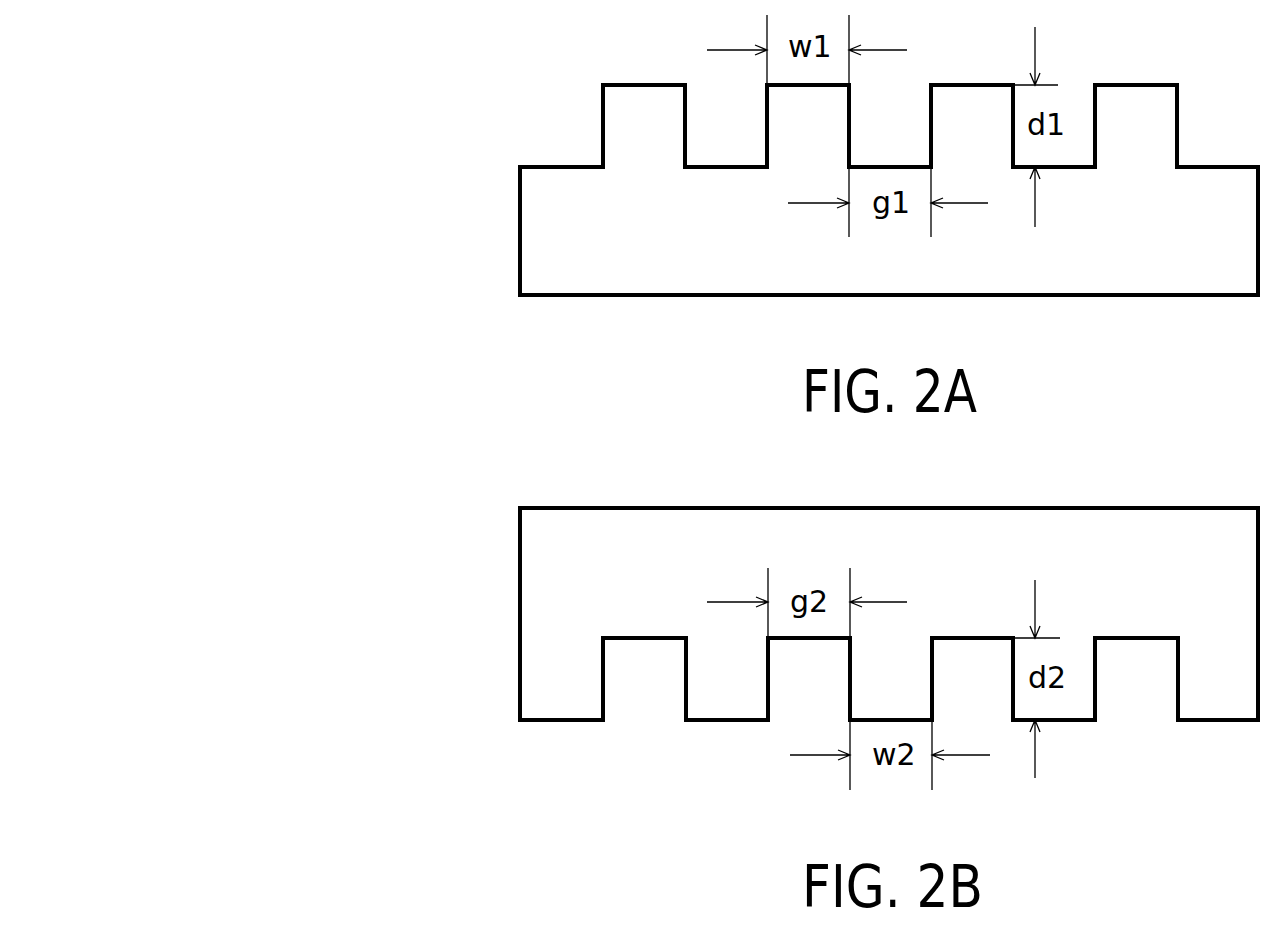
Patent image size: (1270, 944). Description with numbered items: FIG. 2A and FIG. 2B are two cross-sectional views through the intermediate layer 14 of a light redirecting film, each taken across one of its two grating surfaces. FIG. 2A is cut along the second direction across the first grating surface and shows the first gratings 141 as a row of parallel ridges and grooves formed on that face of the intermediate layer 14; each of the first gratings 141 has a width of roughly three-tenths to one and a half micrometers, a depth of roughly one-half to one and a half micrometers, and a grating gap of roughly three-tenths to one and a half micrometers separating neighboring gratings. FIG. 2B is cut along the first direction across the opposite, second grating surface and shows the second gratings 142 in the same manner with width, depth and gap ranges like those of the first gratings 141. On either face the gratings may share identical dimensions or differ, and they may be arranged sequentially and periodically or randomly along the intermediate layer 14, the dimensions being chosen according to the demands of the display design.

In FIG. 2A, the intermediate layer 14 is at (637, 247).
In FIG. 2B, the intermediate layer 14 is at (602, 580).
In FIG. 2A, the first gratings 141 is at (637, 113).
In FIG. 2B, the second gratings 142 is at (555, 673).